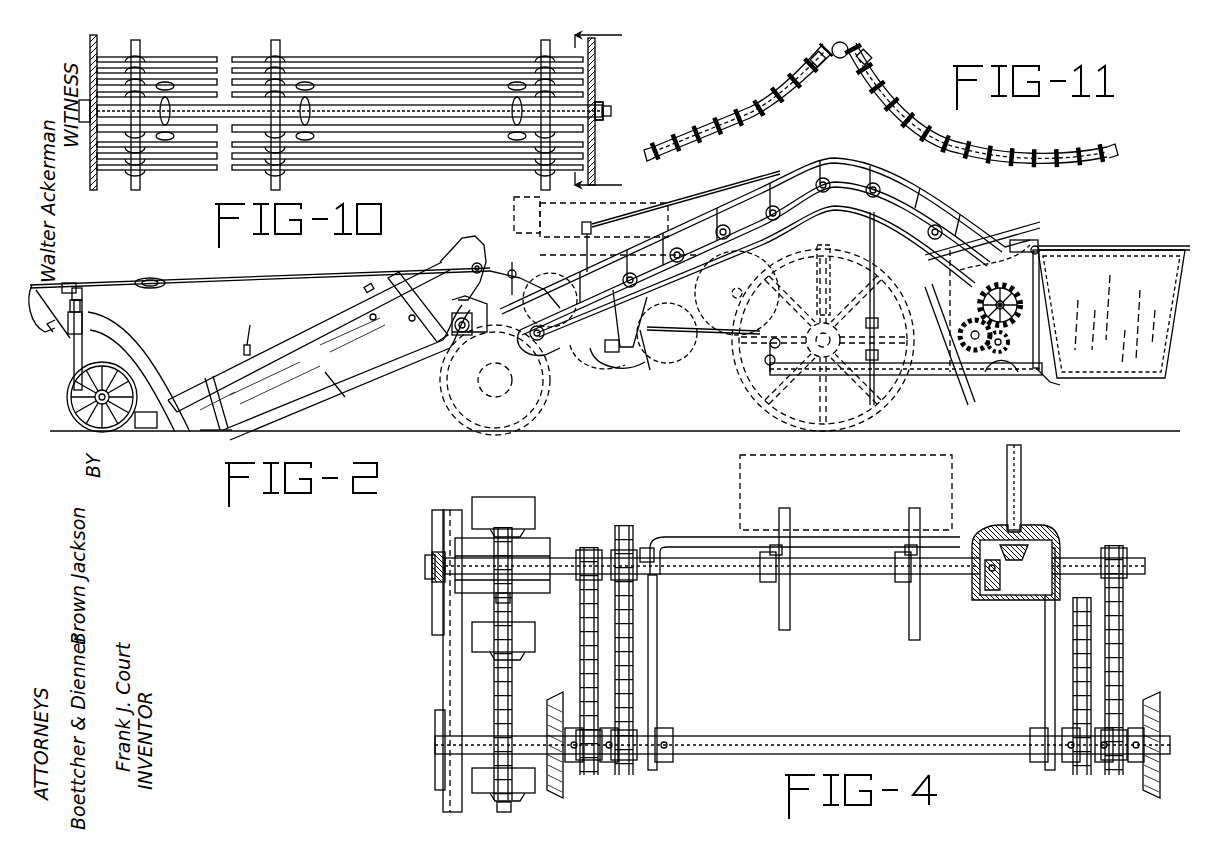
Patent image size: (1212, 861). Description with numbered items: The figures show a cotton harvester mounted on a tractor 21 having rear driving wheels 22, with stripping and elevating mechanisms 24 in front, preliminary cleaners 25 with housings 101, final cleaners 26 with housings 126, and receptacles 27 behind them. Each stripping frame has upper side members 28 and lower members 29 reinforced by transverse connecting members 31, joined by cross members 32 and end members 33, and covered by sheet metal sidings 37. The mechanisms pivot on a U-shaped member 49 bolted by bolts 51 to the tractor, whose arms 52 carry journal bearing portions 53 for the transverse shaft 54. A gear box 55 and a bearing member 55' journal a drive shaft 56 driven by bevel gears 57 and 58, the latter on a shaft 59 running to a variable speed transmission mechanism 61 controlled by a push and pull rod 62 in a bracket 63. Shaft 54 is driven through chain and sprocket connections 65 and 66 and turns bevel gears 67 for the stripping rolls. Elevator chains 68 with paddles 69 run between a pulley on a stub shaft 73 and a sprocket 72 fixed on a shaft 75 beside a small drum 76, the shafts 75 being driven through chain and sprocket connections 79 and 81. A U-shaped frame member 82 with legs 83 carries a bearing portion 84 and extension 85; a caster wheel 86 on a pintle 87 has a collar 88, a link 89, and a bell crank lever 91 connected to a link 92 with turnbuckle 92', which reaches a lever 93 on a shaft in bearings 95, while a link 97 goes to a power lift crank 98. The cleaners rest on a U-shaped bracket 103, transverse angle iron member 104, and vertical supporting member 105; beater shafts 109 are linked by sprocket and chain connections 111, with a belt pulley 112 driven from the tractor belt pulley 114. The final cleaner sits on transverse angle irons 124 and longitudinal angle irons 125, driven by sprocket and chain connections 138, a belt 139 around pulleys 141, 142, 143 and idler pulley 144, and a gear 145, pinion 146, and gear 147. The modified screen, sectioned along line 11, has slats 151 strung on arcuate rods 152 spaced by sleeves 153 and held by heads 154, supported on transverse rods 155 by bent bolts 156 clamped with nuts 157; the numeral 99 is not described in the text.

In FIG. 10, the section line 11 is at (609, 112).
In FIG. 4, the tractor 21 is at (845, 475).
In FIG. 2, the rear driving wheels 22 is at (812, 262).
In FIG. 2, the stripping and elevating mechanisms 24 is at (250, 325).
In FIG. 2, the preliminary cleaners 25 is at (768, 166).
In FIG. 2, the final cleaners 26 is at (1022, 242).
In FIG. 2, the receptacles 27 is at (1168, 255).
In FIG. 2, the upper longitudinal angle iron side members 28 is at (300, 340).
In FIG. 4, the upper longitudinal angle iron side members 28 is at (453, 651).
In FIG. 2, the lower members 29 is at (300, 390).
In FIG. 2, the transverse connecting members 31 is at (364, 289).
In FIG. 2, the cross members 32 is at (190, 430).
In FIG. 4, the cross members 32 is at (435, 720).
In FIG. 2, the end members 33 is at (453, 250).
In FIG. 4, the end members 33 is at (432, 525).
In FIG. 2, the sheet metal sidings 37 is at (349, 390).
In FIG. 2, the U-shaped member 49 is at (455, 305).
In FIG. 4, the U-shaped member 49 is at (685, 538).
In FIG. 4, the bolts 51 is at (775, 545).
In FIG. 4, the forwardly extending arms 52 is at (657, 690).
In FIG. 4, the journal bearing portions 53 is at (664, 733).
In FIG. 2, the transverse shaft 54 is at (410, 320).
In FIG. 4, the transverse shaft 54 is at (822, 738).
In FIG. 4, the gear box 55 is at (1032, 556).
In FIG. 4, the bearing member 55' is at (654, 531).
In FIG. 4, the transverse drive shaft 56 is at (855, 575).
In FIG. 4, the bevel gear 57 is at (1000, 595).
In FIG. 4, the bevel gear 58 is at (1030, 545).
In FIG. 2, the shaft 59 is at (495, 380).
In FIG. 4, the shaft 59 is at (1021, 478).
In FIG. 2, the variable speed transmission mechanism 61 is at (615, 364).
In FIG. 2, the push and pull rod 62 is at (672, 203).
In FIG. 2, the bracket 63 is at (862, 176).
In FIG. 2, the chain and sprocket connection 65 is at (455, 338).
In FIG. 4, the chain and sprocket connection 65 is at (580, 640).
In FIG. 4, the chain and sprocket connection 66 is at (1124, 640).
In FIG. 4, the bevel gears 67 is at (563, 785).
In FIG. 4, the chains 68 is at (510, 700).
In FIG. 4, the paddles 69 is at (492, 505).
In FIG. 4, the sprocket 72 is at (510, 594).
In FIG. 2, the stub shaft 73 is at (215, 395).
In FIG. 2, the shafts 75 is at (477, 262).
In FIG. 4, the shafts 75 is at (425, 565).
In FIG. 4, the small drum 76 is at (465, 540).
In FIG. 4, the chain and sprocket connection 79 is at (640, 655).
In FIG. 4, the chain and sprocket connection 81 is at (1073, 645).
In FIG. 2, the U-shaped frame member 82 is at (128, 330).
In FIG. 2, the legs 83 is at (140, 360).
In FIG. 2, the bearing portion 84 is at (85, 312).
In FIG. 2, the extension 85 is at (50, 330).
In FIG. 2, the caster wheel 86 is at (110, 428).
In FIG. 2, the pintle 87 is at (74, 365).
In FIG. 2, the collar 88 is at (68, 283).
In FIG. 2, the link 89 is at (82, 294).
In FIG. 2, the bell crank lever 91 is at (53, 312).
In FIG. 2, the link 92 is at (260, 269).
In FIG. 2, the turnbuckle 92' is at (136, 261).
In FIG. 2, the lever 93 is at (516, 276).
In FIG. 2, the bearings 95 is at (553, 258).
In FIG. 2, the link 97 is at (700, 333).
In FIG. 2, the power lift crank 98 is at (770, 345).
In FIG. 2, the lever 99 is at (765, 365).
In FIG. 10, the housing 101 is at (92, 190).
In FIG. 2, the housing 101 is at (822, 178).
In FIG. 2, the U-shaped bracket 103 is at (626, 353).
In FIG. 2, the transverse angle iron member 104 is at (647, 365).
In FIG. 2, the vertical supporting member 105 is at (876, 268).
In FIG. 2, the shaft 109 is at (880, 193).
In FIG. 2, the sprocket and chain connections 111 is at (870, 180).
In FIG. 2, the belt pulley 112 is at (592, 352).
In FIG. 2, the belt pulley 114 is at (649, 328).
In FIG. 2, the transverse angle irons 124 is at (1040, 370).
In FIG. 2, the longitudinal angle irons 125 is at (940, 377).
In FIG. 2, the housing 126 is at (950, 340).
In FIG. 2, the sprocket and chain connections 138 is at (945, 255).
In FIG. 2, the belt 139 is at (1050, 246).
In FIG. 2, the pulley 141 is at (1040, 245).
In FIG. 2, the pulley 142 is at (1015, 240).
In FIG. 2, the pulley 143 is at (948, 340).
In FIG. 2, the idler pulley 144 is at (1000, 248).
In FIG. 2, the gear 145 is at (1016, 300).
In FIG. 2, the pinion 146 is at (975, 352).
In FIG. 2, the gear 147 is at (1005, 360).
In FIG. 10, the slats 151 is at (372, 90).
In FIG. 11, the slats 151 is at (712, 138).
In FIG. 10, the arcuate-shaped rods 152 is at (135, 190).
In FIG. 11, the arcuate-shaped rods 152 is at (1108, 148).
In FIG. 11, the sleeves 153 is at (762, 105).
In FIG. 10, the heads 154 is at (592, 100).
In FIG. 11, the heads 154 is at (852, 48).
In FIG. 10, the transverse supporting rods 155 is at (410, 105).
In FIG. 11, the transverse supporting rods 155 is at (840, 58).
In FIG. 10, the bolts 156 is at (167, 98).
In FIG. 11, the bolts 156 is at (826, 48).
In FIG. 10, the nuts 157 is at (305, 82).
In FIG. 11, the nuts 157 is at (810, 58).